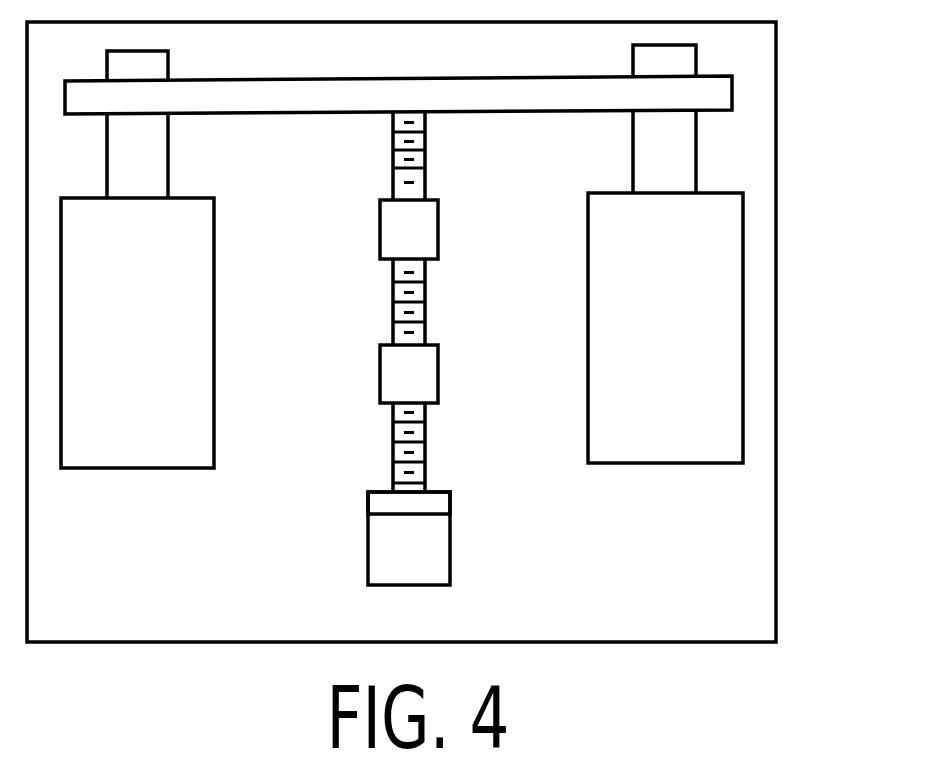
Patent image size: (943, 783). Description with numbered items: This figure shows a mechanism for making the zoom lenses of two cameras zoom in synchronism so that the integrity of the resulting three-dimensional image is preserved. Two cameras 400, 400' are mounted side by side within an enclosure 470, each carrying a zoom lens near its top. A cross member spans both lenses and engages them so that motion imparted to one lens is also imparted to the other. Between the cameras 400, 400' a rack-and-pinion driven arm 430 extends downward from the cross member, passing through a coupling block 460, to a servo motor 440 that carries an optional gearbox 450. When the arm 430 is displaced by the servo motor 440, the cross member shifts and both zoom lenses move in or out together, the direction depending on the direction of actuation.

The camera 400 is at (137, 259).
The camera 400' is at (665, 254).
The rack-and-pinion driven arm 430 is at (393, 443).
The servo motor 440 is at (450, 563).
The gearbox 450 is at (450, 504).
The arm coupling block 460 is at (438, 228).
The housing frame 470 is at (776, 143).